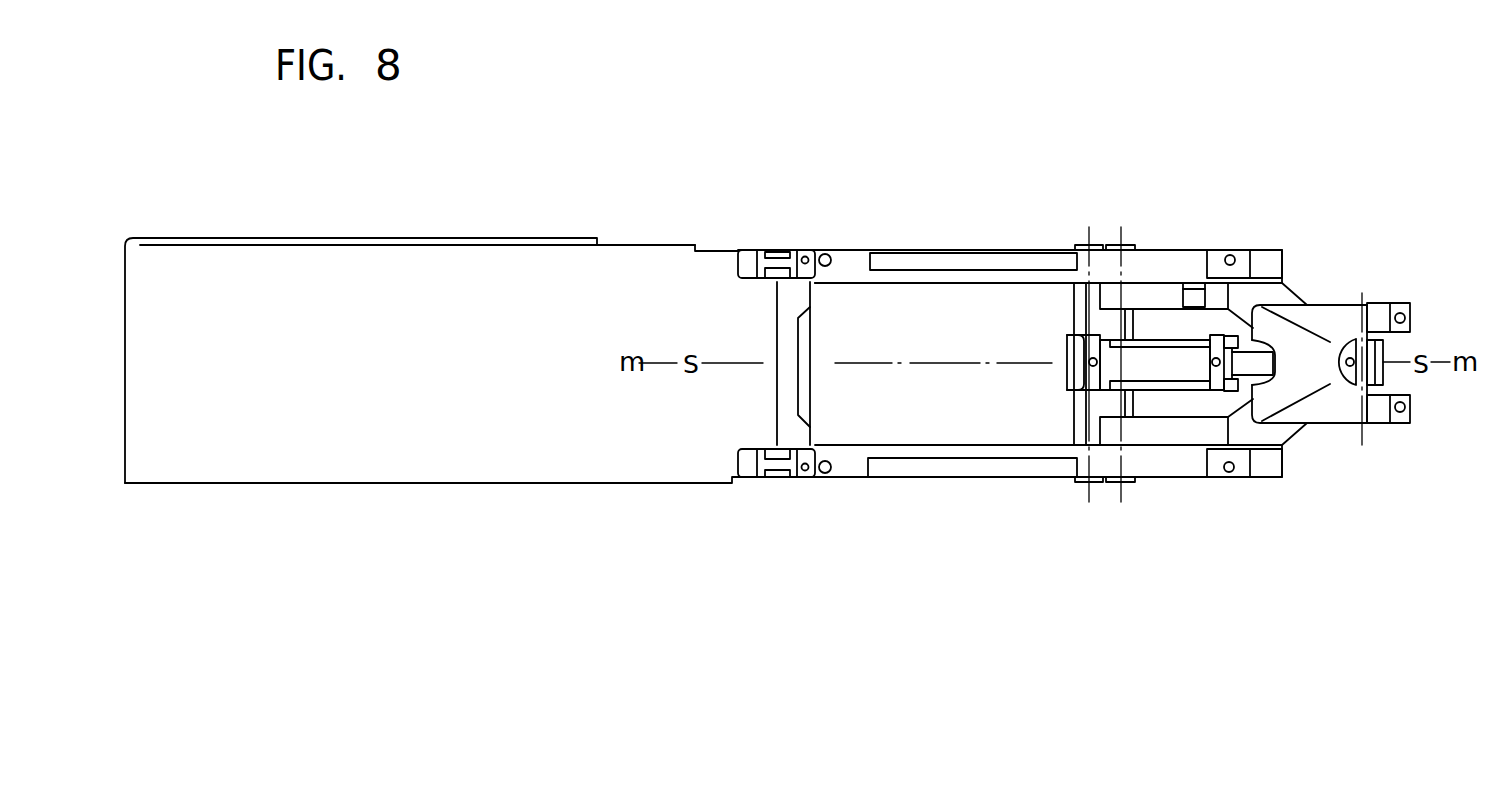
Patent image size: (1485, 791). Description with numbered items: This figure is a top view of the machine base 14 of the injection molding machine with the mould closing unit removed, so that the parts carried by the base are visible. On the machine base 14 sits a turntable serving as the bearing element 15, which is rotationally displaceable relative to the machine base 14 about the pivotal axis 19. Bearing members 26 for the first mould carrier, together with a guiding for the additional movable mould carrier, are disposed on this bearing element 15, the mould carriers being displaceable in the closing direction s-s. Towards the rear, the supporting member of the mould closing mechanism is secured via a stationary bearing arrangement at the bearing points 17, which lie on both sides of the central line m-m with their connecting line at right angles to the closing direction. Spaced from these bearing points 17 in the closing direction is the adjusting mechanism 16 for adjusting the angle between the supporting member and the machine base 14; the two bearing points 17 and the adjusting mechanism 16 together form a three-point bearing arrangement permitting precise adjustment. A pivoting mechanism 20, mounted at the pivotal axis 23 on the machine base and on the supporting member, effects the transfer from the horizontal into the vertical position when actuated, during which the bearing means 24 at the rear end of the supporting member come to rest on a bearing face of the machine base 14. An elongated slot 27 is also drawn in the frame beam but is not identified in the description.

The machine base 14 is at (622, 242).
The bearing element 15 is at (1197, 272).
The adjusting mechanism 16 is at (1348, 359).
The bearing points 17 is at (1231, 255).
The pivotal axis 19 is at (1129, 245).
The pivoting mechanism 20 is at (1185, 360).
The pivotal axis 23 is at (1076, 244).
The bearing means 24 is at (1392, 302).
The bearing members 26 is at (770, 262).
The slot 27 is at (942, 252).